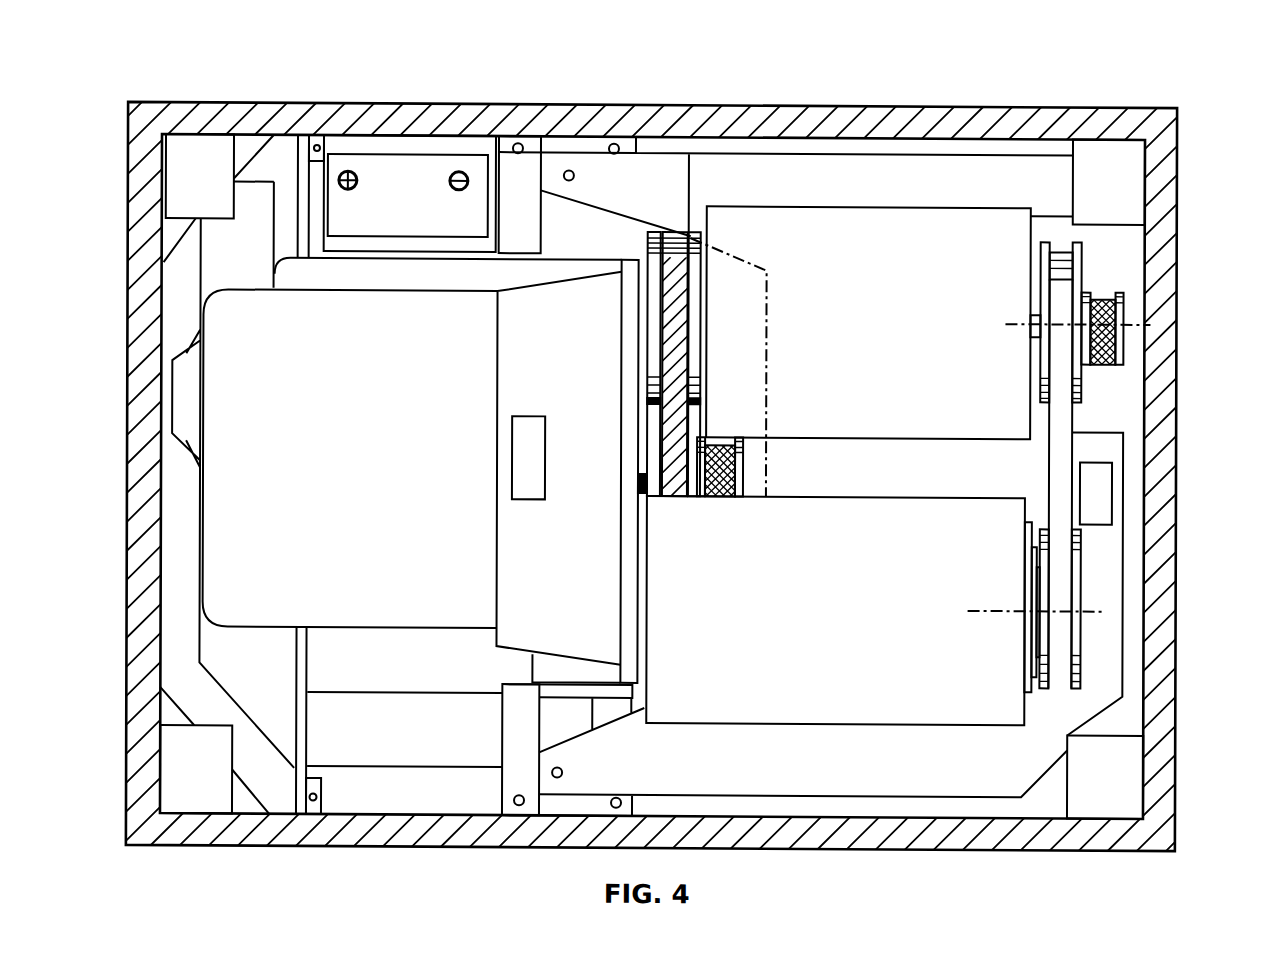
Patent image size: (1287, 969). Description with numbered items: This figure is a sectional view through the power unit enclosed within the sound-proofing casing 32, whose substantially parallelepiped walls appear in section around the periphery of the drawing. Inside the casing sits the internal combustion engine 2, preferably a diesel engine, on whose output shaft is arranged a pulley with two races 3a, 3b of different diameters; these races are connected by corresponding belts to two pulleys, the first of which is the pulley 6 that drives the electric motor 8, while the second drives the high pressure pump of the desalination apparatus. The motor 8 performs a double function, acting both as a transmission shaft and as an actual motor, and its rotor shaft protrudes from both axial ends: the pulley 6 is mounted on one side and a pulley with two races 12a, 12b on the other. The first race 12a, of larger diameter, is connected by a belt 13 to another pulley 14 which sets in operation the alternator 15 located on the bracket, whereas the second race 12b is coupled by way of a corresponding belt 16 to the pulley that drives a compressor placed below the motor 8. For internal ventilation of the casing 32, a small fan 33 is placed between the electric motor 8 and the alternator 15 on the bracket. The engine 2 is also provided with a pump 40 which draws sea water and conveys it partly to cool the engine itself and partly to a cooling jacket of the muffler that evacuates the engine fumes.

The internal combustion engine 2 is at (328, 453).
The race of pulley 3a is at (640, 482).
The race of pulley 3b is at (743, 463).
The pulley 6 is at (690, 234).
The electric motor 8 is at (851, 321).
The first race of pulley 12a is at (1082, 244).
The second race of pulley 12b is at (1123, 313).
The belt 13 is at (1060, 471).
The pulley 14 is at (1080, 631).
The alternator 15 is at (832, 600).
The belt 16 is at (1098, 362).
The sound-proofing casing 32 is at (945, 106).
The fan 33 is at (1093, 497).
The pump 40 is at (527, 430).